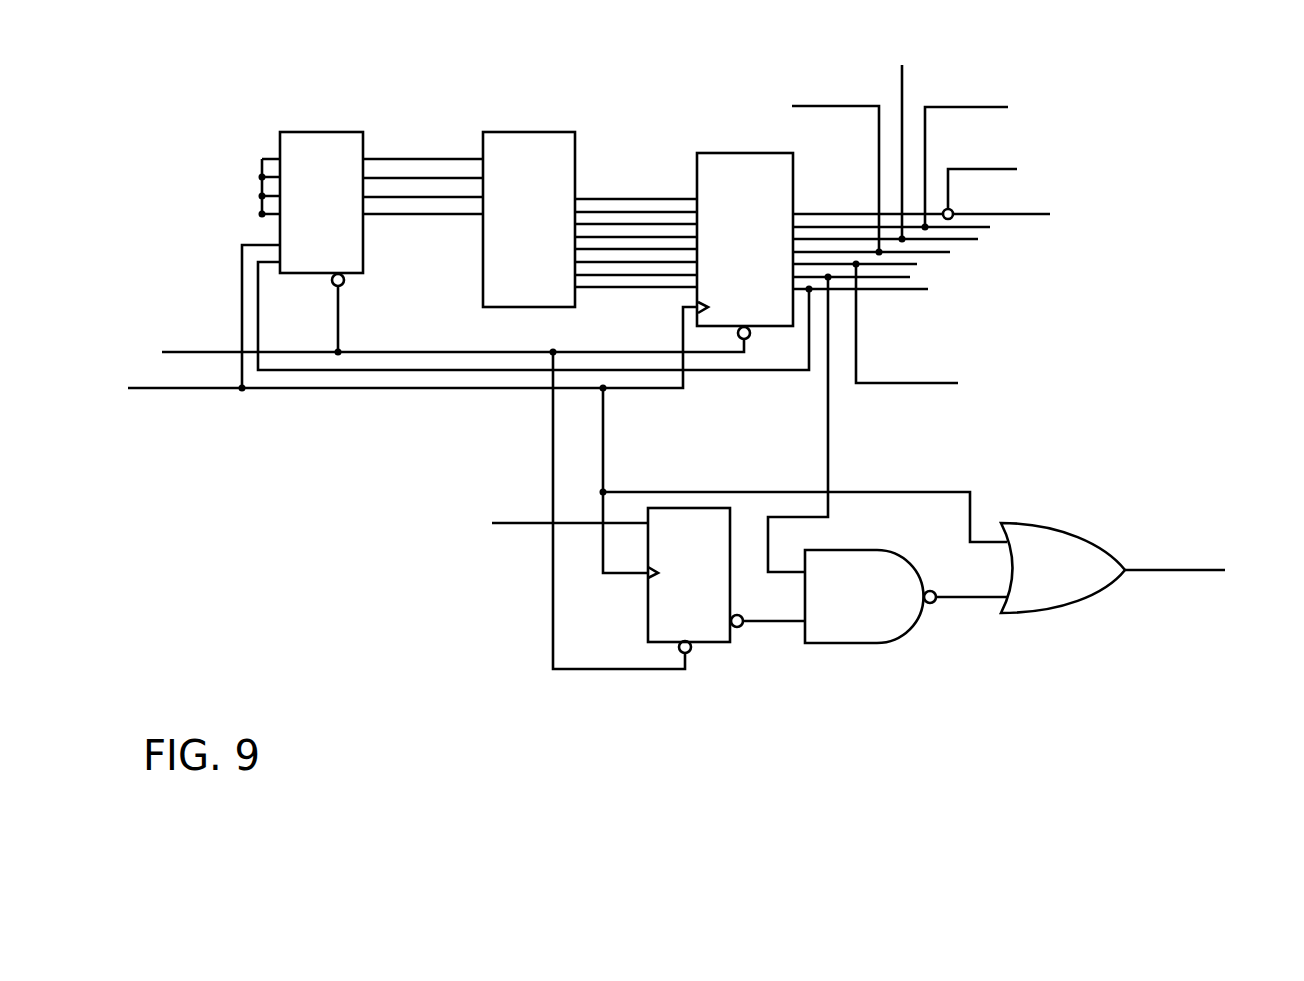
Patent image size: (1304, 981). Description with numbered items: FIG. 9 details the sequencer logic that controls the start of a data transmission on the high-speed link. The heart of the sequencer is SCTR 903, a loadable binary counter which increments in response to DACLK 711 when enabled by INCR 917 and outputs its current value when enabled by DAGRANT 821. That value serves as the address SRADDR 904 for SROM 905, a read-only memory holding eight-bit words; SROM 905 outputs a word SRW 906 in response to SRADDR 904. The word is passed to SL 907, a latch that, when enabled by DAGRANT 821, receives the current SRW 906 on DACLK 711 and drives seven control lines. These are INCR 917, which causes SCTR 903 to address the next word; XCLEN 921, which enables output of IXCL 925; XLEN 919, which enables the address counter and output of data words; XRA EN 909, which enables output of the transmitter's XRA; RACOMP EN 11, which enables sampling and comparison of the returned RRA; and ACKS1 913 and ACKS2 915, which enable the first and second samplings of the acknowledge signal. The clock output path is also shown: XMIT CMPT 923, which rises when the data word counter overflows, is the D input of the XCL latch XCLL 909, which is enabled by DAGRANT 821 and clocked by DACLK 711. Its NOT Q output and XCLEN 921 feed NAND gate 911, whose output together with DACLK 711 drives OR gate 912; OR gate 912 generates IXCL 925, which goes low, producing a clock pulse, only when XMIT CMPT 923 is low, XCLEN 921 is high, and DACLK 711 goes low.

The SCTR 903 is at (296, 242).
The SRADDR 904 is at (427, 157).
The SROM 905 is at (529, 219).
The SRW 906 is at (648, 193).
The SL 907 is at (873, 246).
The XRA EN / XCL latch (XCLL) 909 is at (765, 374).
The RACOMP EN 11 is at (931, 140).
The ACKS1 913 is at (1024, 164).
The ACKS2 915 is at (1038, 189).
The INCR 917 is at (535, 342).
The XLEN 919 is at (915, 338).
The XCLEN 921 is at (804, 479).
The XMIT CMPT 923 is at (534, 526).
The DAGRANT 821 is at (403, 496).
The DACLK 711 is at (382, 331).
The NAND gate 911 is at (875, 459).
The OR gate 912 is at (1063, 568).
The IXCL 925 is at (1186, 584).